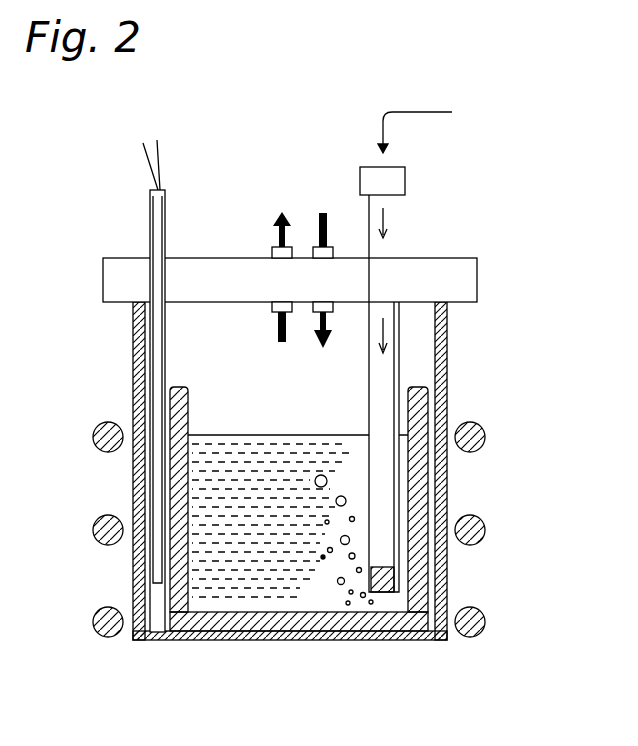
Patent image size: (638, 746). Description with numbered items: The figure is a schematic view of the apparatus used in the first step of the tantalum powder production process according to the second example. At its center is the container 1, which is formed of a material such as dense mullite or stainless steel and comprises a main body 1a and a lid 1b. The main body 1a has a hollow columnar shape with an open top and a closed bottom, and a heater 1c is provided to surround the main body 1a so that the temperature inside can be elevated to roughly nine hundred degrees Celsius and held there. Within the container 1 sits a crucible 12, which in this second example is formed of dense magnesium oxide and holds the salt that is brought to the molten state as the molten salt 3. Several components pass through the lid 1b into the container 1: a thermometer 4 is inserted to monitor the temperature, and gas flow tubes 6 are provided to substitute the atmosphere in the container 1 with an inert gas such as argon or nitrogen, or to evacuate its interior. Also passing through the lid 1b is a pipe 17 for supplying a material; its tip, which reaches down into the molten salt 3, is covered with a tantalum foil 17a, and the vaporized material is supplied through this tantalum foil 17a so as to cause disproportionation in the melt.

The container 1 is at (447, 345).
The main body 1a is at (447, 378).
The lid 1b is at (477, 280).
The heater 1c is at (485, 437).
The molten salt 3 is at (287, 587).
The thermometer 4 is at (152, 215).
The gas flow tubes 6 is at (313, 247).
The crucible 12 is at (405, 625).
The pipe 17 is at (405, 180).
The tantalum foil 17a is at (384, 578).